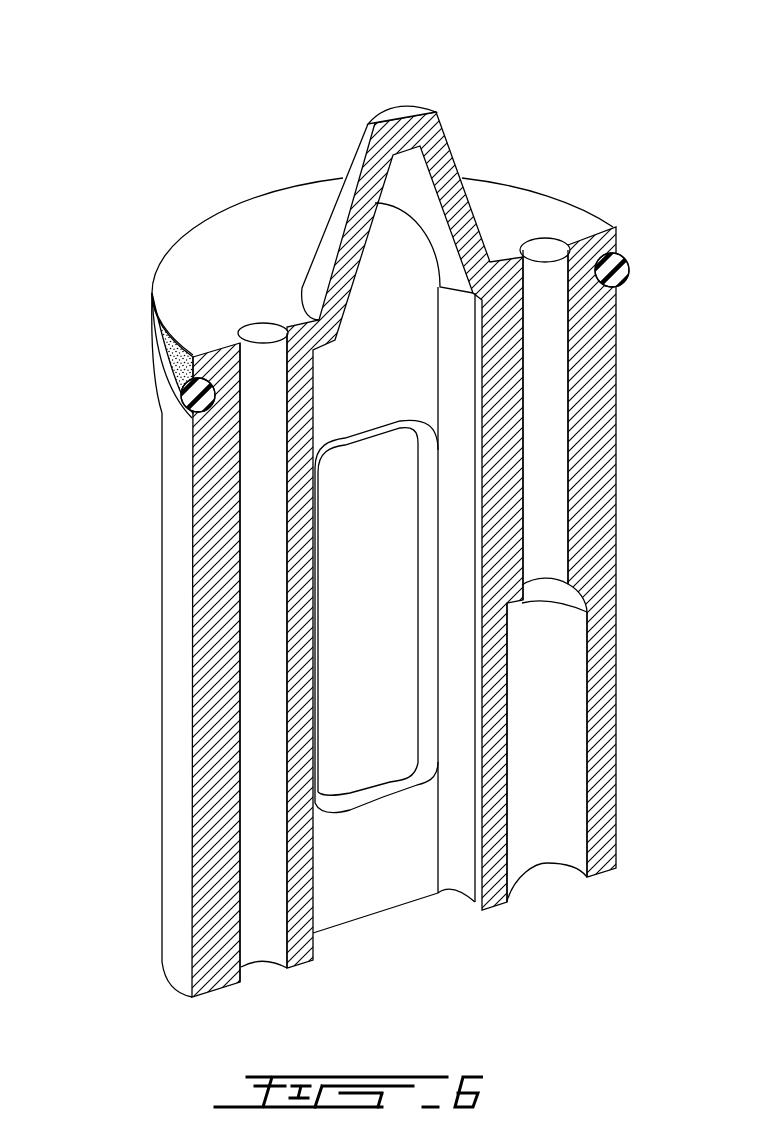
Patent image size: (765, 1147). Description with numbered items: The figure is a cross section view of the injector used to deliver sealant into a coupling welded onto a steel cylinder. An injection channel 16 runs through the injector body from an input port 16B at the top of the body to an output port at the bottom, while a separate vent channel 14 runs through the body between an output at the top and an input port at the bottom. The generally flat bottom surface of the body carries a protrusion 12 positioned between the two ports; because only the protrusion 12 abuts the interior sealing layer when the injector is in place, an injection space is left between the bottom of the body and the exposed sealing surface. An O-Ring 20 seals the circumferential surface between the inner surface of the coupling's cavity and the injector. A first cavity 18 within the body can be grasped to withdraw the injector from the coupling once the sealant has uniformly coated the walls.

The protrusion 12 is at (443, 126).
The vent channel 14 is at (257, 363).
The injection channel 16 is at (540, 357).
The input port 16B is at (552, 873).
The first cavity 18 is at (355, 520).
The O-Ring 20 is at (131, 336).